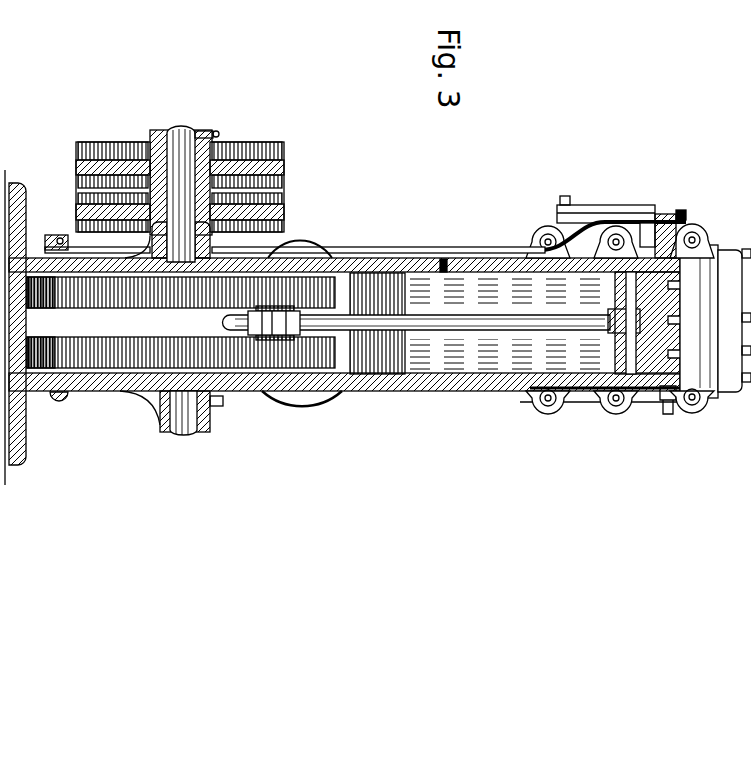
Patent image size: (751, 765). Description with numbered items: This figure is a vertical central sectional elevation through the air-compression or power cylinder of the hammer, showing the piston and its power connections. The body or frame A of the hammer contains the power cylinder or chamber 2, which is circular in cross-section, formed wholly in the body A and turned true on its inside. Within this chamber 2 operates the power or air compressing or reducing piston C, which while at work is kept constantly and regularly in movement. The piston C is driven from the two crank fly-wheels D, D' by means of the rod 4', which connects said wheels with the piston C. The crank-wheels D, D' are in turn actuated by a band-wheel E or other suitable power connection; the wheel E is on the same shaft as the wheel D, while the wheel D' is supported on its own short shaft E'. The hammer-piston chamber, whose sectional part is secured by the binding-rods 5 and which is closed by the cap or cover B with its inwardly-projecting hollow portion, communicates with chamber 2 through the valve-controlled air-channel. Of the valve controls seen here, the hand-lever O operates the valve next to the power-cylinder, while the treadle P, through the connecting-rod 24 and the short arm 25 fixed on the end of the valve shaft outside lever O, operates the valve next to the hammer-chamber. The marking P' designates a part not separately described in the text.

The body or frame A is at (358, 380).
The power cylinder or chamber 2 is at (480, 362).
The rod 4' is at (372, 323).
The power or air compressing or reducing piston C is at (650, 395).
The cap or cover B is at (722, 397).
The binding-rods 5 is at (548, 410).
The hand-lever O is at (632, 205).
The short arm 25 is at (688, 224).
The connecting-rod 24 is at (396, 247).
The crank fly-wheel D is at (301, 241).
The crank fly-wheel D' is at (291, 397).
The band-wheel E is at (192, 194).
The short shaft E' is at (171, 424).
The treadle P is at (54, 225).
The brush P' is at (63, 408).